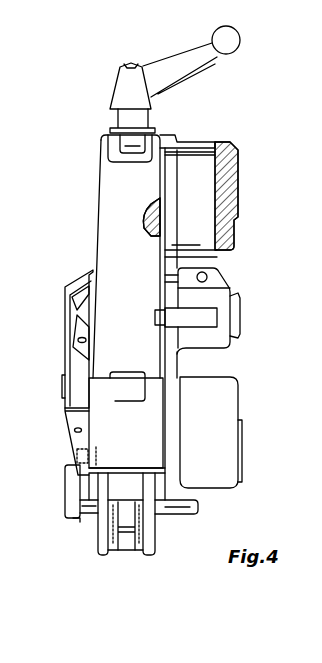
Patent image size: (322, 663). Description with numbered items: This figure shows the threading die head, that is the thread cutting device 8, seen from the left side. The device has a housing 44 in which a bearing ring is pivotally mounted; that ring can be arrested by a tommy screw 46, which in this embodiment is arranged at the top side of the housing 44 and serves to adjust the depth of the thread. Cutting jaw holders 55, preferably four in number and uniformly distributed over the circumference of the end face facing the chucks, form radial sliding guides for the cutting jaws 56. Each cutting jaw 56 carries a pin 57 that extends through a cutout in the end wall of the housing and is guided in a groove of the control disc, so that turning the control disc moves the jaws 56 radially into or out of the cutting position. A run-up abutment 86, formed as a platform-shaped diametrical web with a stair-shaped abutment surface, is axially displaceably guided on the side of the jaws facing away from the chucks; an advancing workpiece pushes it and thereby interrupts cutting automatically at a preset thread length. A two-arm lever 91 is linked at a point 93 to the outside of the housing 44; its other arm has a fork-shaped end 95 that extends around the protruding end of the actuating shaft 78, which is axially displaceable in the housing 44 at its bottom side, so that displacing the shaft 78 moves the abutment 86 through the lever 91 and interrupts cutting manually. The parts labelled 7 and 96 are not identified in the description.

The machine frame 7 is at (22, 452).
The thread cutting device 8 is at (250, 315).
The housing 44 is at (104, 205).
The tommy screw 46 is at (113, 91).
The cutting jaw holders 55 is at (228, 166).
The cutting jaws 56 is at (199, 163).
The pin 57 is at (150, 213).
The actuating shaft 78 is at (87, 512).
The run-up abutment 86 is at (87, 277).
The two-arm lever 91 is at (73, 362).
The linkage point 93 is at (76, 431).
The fork-shaped end 95 is at (79, 476).
The clamp screw 96 is at (73, 516).